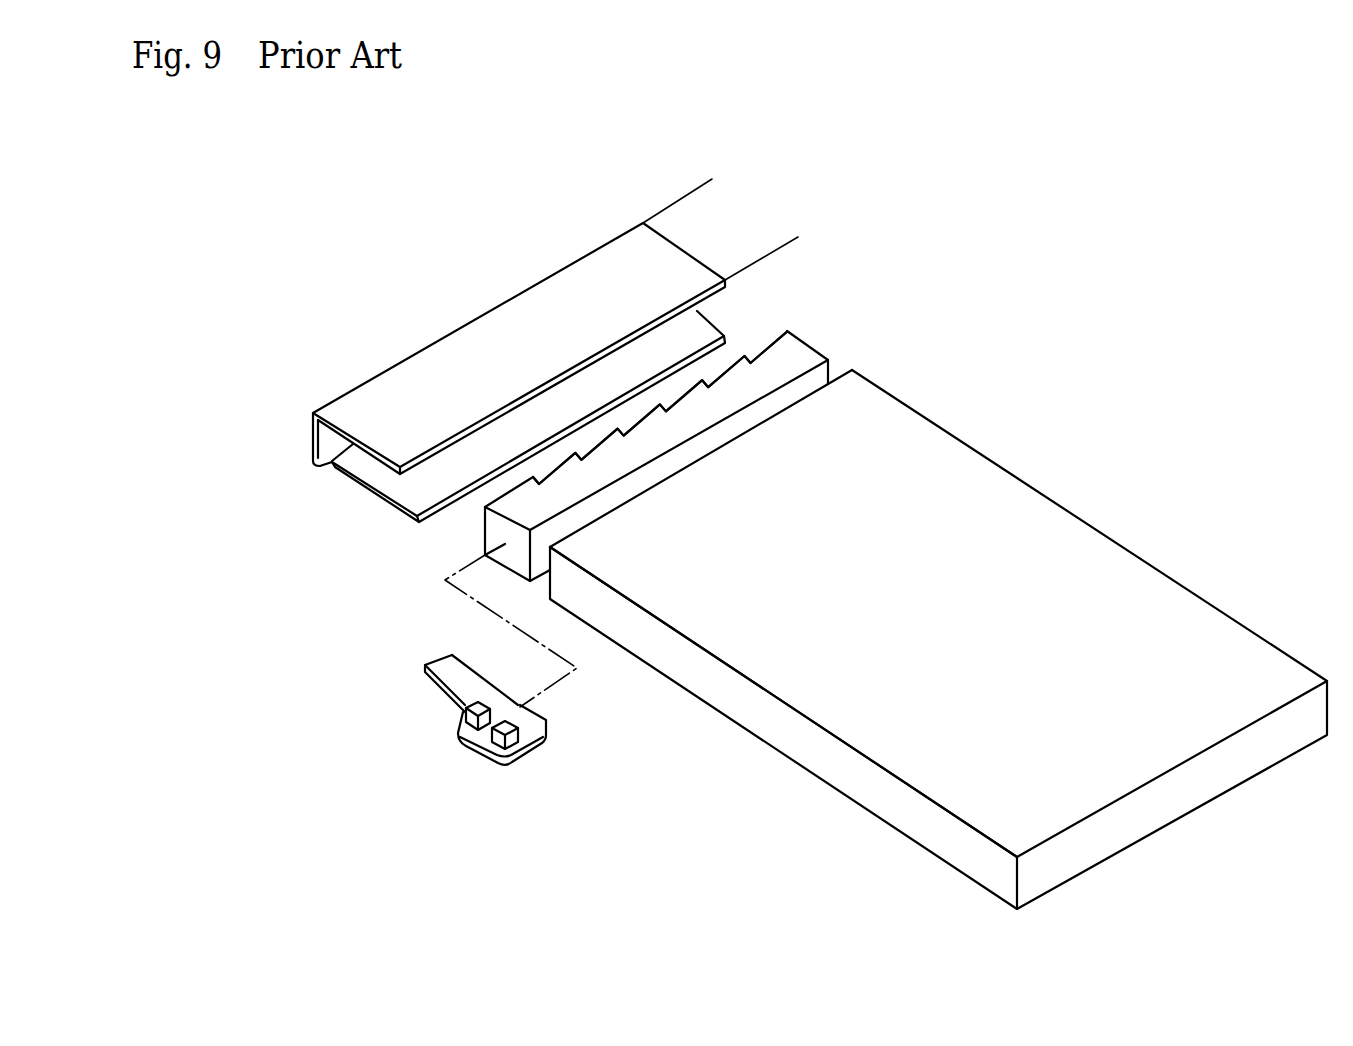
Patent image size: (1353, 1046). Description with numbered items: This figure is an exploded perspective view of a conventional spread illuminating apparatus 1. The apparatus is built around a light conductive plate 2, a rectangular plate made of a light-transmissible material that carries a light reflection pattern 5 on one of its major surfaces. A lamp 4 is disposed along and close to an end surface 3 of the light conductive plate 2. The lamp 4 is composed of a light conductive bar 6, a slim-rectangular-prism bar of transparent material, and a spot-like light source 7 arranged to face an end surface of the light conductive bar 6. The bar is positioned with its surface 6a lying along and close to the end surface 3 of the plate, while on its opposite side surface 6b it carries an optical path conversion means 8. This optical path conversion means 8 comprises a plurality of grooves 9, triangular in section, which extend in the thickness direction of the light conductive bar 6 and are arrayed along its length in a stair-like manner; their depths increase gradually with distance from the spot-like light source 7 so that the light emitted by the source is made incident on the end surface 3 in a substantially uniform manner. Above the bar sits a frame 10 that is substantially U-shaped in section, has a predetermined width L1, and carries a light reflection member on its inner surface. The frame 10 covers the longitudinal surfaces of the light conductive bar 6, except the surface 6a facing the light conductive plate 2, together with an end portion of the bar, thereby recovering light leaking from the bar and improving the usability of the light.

The spread illuminating apparatus 1 is at (1027, 291).
The light conductive plate 2 is at (938, 624).
The end surface 3 is at (828, 386).
The lamp 4 is at (348, 597).
The light reflection pattern 5 is at (925, 522).
The light conductive bar 6 is at (596, 484).
The surface 6a is at (643, 475).
The side surface 6b is at (503, 484).
The spot-like light source 7 is at (462, 724).
The optical path conversion means 8 is at (769, 330).
The grooves 9 is at (690, 338).
The frame 10 is at (440, 337).
The width L1 is at (698, 188).